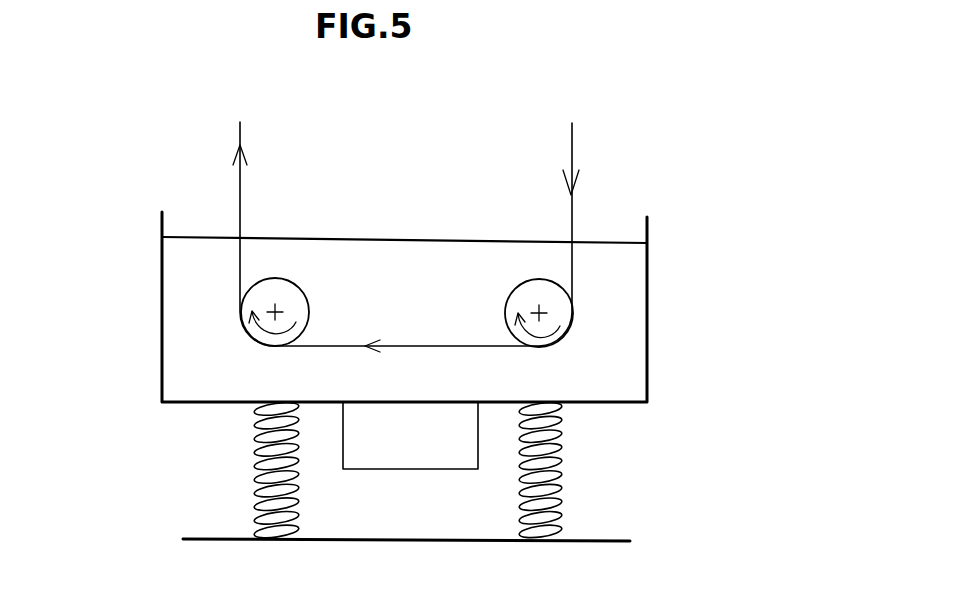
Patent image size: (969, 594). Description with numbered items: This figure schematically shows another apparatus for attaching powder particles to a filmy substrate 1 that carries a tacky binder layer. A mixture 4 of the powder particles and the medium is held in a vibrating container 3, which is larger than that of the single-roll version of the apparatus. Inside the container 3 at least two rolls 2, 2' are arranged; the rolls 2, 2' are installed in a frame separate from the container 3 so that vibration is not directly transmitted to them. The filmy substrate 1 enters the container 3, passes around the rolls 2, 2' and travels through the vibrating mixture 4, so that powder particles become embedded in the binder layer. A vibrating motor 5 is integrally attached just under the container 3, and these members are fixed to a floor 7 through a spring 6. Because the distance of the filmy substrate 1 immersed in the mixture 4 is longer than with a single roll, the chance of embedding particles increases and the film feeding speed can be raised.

The filmy substrate 1 is at (572, 148).
The roll 2 is at (608, 307).
The roll 2' is at (199, 274).
The container 3 is at (647, 227).
The mixture of the powder particles and the medium 4 is at (354, 260).
The vibrating motor 5 is at (378, 437).
The spring 6 is at (253, 478).
The floor 7 is at (406, 558).